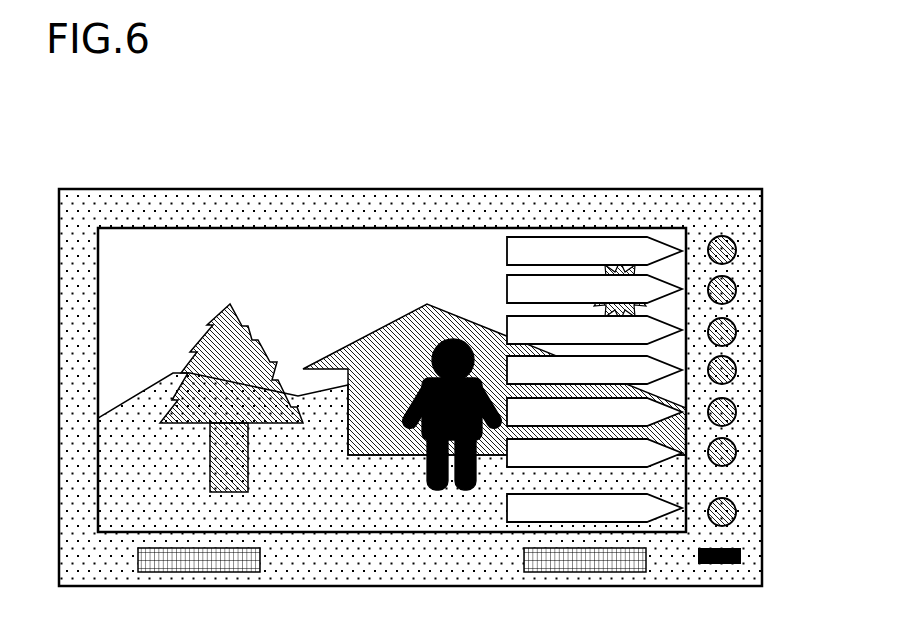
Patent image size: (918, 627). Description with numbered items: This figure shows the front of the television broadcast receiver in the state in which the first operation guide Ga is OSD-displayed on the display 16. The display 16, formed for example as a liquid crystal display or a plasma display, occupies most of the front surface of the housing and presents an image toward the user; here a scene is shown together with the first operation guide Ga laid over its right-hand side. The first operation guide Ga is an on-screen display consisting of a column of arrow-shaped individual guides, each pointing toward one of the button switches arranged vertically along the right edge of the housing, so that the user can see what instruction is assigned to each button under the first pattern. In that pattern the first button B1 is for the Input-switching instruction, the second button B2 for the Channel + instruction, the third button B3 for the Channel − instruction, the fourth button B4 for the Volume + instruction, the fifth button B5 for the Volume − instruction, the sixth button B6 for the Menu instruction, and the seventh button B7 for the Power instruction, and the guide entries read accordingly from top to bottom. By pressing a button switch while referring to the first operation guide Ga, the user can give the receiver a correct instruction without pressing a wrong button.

The display 16 is at (380, 232).
The first operation guide Ga is at (662, 243).
The first button B1 is at (733, 242).
The second button B2 is at (733, 282).
The third button B3 is at (733, 324).
The fourth button B4 is at (733, 362).
The fifth button B5 is at (733, 404).
The sixth button B6 is at (733, 444).
The seventh button B7 is at (733, 504).